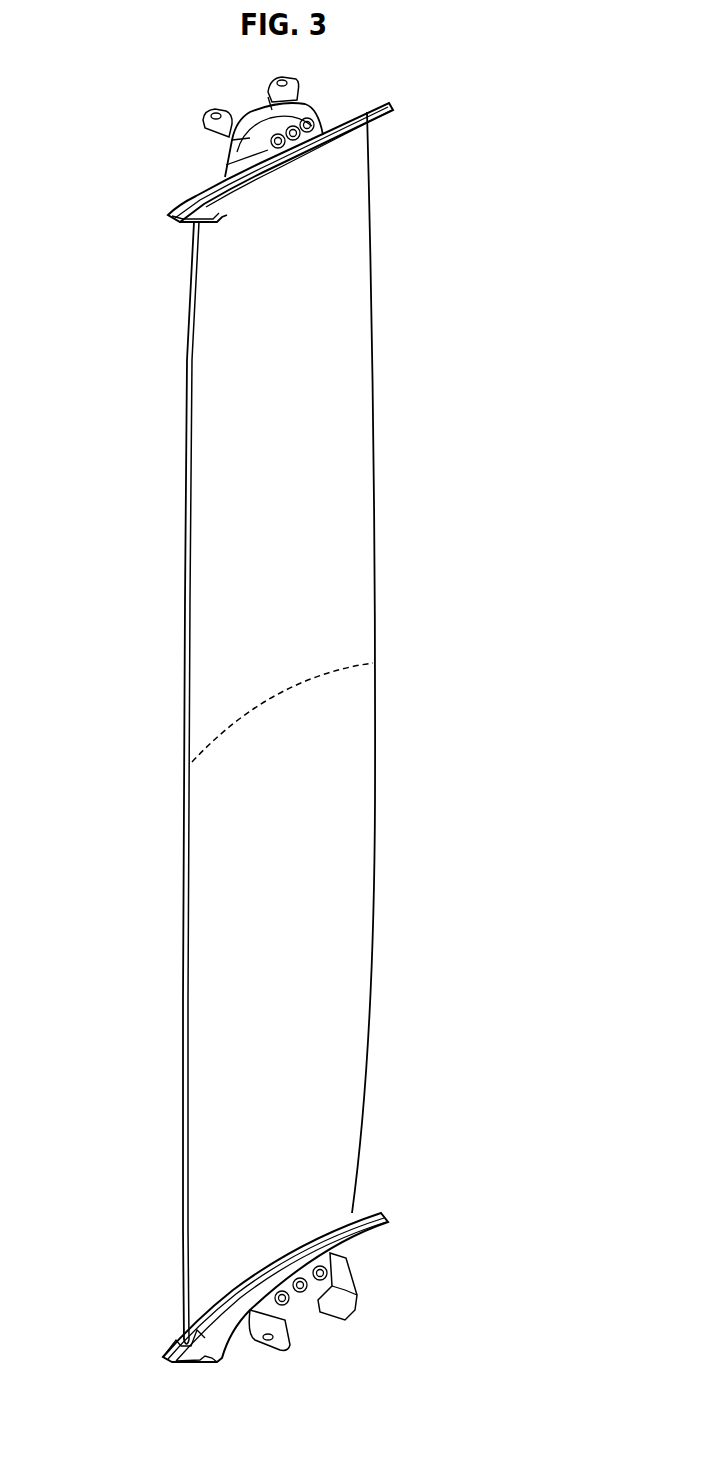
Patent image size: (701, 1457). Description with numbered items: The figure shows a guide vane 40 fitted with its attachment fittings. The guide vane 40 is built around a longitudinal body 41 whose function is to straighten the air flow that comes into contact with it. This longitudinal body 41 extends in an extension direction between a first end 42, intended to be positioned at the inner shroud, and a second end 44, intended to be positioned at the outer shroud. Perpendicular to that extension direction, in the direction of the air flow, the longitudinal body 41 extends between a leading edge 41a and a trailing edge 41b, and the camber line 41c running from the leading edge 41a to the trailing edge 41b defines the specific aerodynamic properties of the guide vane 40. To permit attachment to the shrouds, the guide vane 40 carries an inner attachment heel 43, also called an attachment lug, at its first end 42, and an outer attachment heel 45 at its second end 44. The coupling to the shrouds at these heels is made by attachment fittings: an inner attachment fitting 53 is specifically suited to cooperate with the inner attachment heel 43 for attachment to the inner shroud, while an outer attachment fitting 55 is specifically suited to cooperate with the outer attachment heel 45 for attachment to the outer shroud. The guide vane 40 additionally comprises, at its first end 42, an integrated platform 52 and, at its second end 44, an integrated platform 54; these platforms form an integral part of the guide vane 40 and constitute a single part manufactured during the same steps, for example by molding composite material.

The guide vane 40 is at (84, 501).
The longitudinal body 41 is at (298, 430).
The leading edge 41a is at (185, 793).
The trailing edge 41b is at (377, 773).
The camber line 41c is at (277, 695).
The first end 42 is at (133, 1223).
The inner attachment heel 43 is at (346, 1254).
The second end 44 is at (133, 103).
The outer attachment heel 45 is at (318, 103).
The integrated platform 52 is at (180, 1345).
The inner attachment fitting 53 is at (287, 1323).
The integrated platform 54 is at (382, 125).
The outer attachment fitting 55 is at (206, 106).